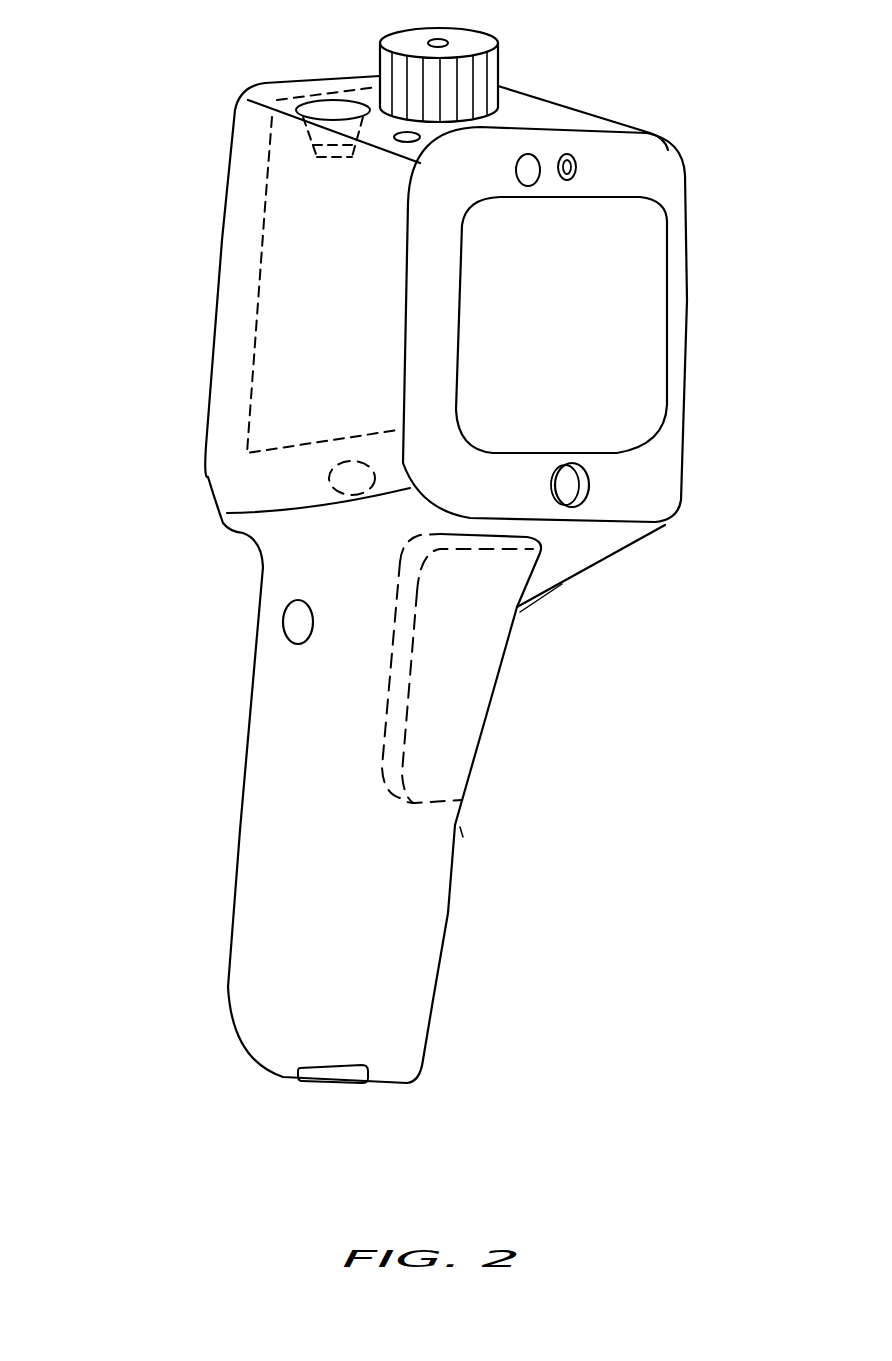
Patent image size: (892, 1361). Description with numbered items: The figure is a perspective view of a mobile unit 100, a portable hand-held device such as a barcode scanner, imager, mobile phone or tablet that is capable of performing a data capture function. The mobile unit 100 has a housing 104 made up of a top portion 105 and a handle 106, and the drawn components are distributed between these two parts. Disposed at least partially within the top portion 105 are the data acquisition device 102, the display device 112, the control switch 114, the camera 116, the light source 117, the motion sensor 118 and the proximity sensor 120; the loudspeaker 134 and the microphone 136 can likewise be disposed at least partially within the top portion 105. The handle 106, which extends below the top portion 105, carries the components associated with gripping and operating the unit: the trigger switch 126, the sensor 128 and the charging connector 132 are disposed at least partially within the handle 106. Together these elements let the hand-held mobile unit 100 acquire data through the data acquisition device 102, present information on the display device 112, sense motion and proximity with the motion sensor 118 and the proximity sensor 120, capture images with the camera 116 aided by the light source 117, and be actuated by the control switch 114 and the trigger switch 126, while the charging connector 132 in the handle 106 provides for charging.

The mobile unit 100 is at (116, 122).
The data acquisition device 102 is at (603, 337).
The housing 104 is at (705, 395).
The top portion 105 is at (217, 308).
The handle 106 is at (373, 889).
The display device 112 is at (363, 307).
The control switch 114 is at (476, 29).
The camera 116 is at (577, 165).
The light source 117 is at (516, 172).
The motion sensor 118 is at (330, 481).
The proximity sensor 120 is at (592, 488).
The trigger switch 126 is at (395, 585).
The sensor 128 is at (312, 634).
The charging connector 132 is at (333, 1065).
The loudspeaker 134 is at (317, 100).
The microphone 136 is at (407, 146).